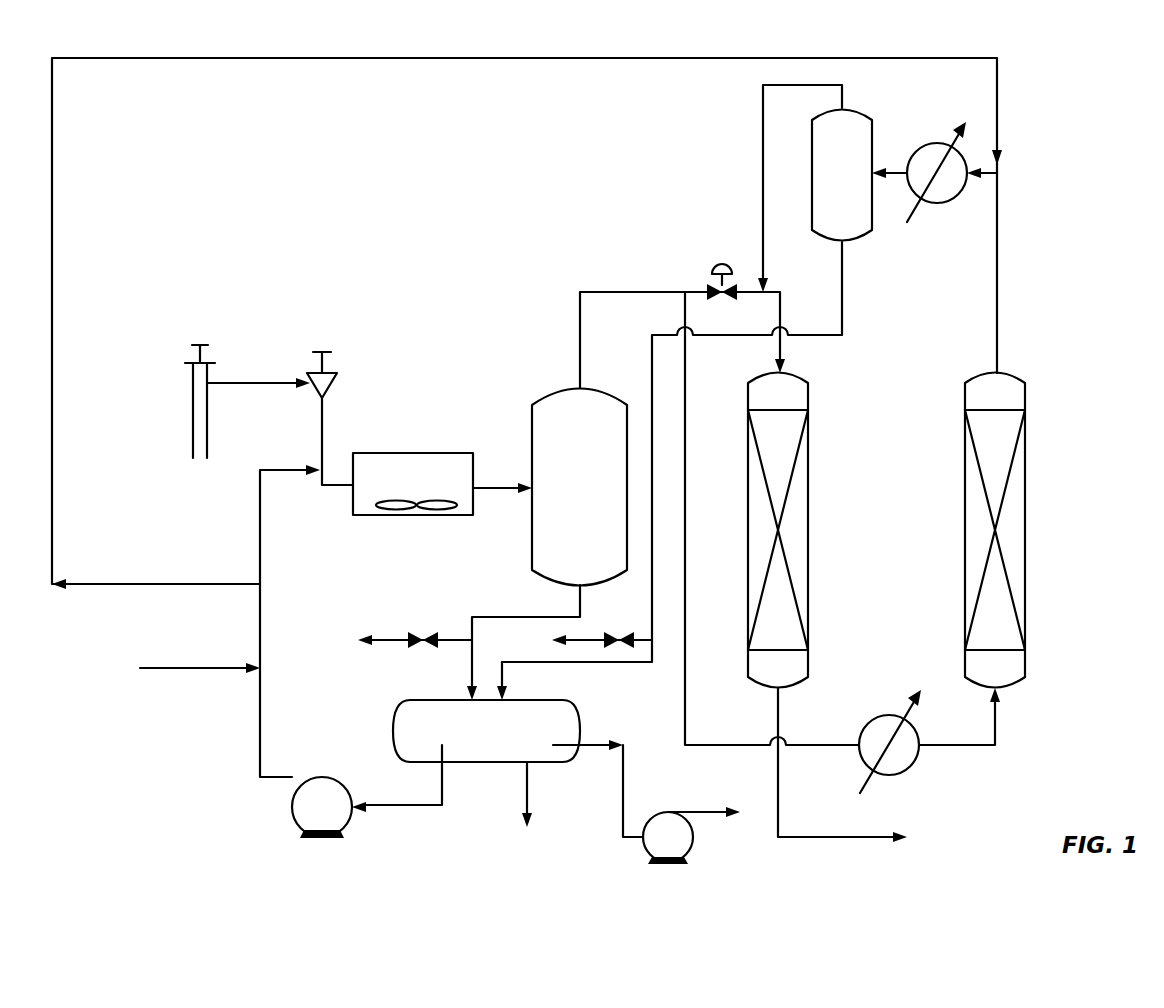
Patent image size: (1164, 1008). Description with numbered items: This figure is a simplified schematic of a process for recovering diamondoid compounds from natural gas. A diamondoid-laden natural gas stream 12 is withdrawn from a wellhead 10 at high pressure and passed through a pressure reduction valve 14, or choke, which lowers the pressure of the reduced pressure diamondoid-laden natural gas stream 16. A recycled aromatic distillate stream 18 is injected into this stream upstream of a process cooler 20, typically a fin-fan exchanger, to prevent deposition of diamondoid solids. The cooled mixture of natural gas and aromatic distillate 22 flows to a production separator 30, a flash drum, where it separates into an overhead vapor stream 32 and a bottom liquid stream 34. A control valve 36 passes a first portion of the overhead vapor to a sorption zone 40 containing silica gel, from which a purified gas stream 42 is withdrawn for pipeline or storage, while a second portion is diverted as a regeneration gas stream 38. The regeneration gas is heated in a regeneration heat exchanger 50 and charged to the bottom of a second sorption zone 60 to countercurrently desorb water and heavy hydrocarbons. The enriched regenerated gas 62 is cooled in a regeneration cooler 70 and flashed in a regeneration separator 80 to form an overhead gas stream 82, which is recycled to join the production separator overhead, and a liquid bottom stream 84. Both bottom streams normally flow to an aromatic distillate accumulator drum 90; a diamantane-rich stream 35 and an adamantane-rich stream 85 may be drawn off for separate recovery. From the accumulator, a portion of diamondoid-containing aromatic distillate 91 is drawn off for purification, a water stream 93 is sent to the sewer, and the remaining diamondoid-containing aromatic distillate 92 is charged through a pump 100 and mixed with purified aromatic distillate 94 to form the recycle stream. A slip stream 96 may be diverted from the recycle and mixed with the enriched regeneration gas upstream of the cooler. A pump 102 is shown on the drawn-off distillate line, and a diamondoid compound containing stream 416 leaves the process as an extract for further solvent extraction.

The wellhead 10 is at (193, 410).
The diamondoid-laden natural gas stream 12 is at (240, 383).
The pressure reduction valve 14 is at (334, 390).
The reduced pressure diamondoid-laden natural gas stream 16 is at (322, 425).
The recycled aromatic distillate stream 18 is at (260, 538).
The process cooler 20 is at (430, 490).
The cooled mixture of natural gas and aromatic distillate 22 is at (490, 488).
The production separator 30 is at (596, 490).
The overhead vapor stream 32 is at (580, 338).
The bottom liquid stream 34 is at (472, 662).
The diamantane-rich stream 35 is at (396, 638).
The control valve 36 is at (716, 266).
The regeneration gas stream 38 is at (685, 372).
The sorption zone 40 is at (795, 445).
The purified gas stream 42 is at (778, 790).
The regeneration heat exchanger 50 is at (906, 758).
The sorption zone 60 is at (1012, 445).
The enriched regenerated gas 62 is at (997, 297).
The regeneration cooler 70 is at (954, 186).
The regeneration separator 80 is at (859, 186).
The overhead gas stream 82 is at (763, 120).
The liquid bottom stream 84 is at (842, 300).
The adamantane-rich stream 85 is at (634, 630).
The aromatic distillate accumulator drum 90 is at (505, 740).
The diamondoid-containing aromatic distillate 91 is at (596, 745).
The remaining diamondoid-containing aromatic distillate 92 is at (442, 808).
The water stream 93 is at (527, 782).
The purified aromatic distillate 94 is at (200, 668).
The slip stream of diamondoid-containing aromatic distillate 96 is at (162, 584).
The pump 100 is at (346, 820).
The product pump 102 is at (690, 850).
The diamondoid compound containing stream 416 is at (700, 812).